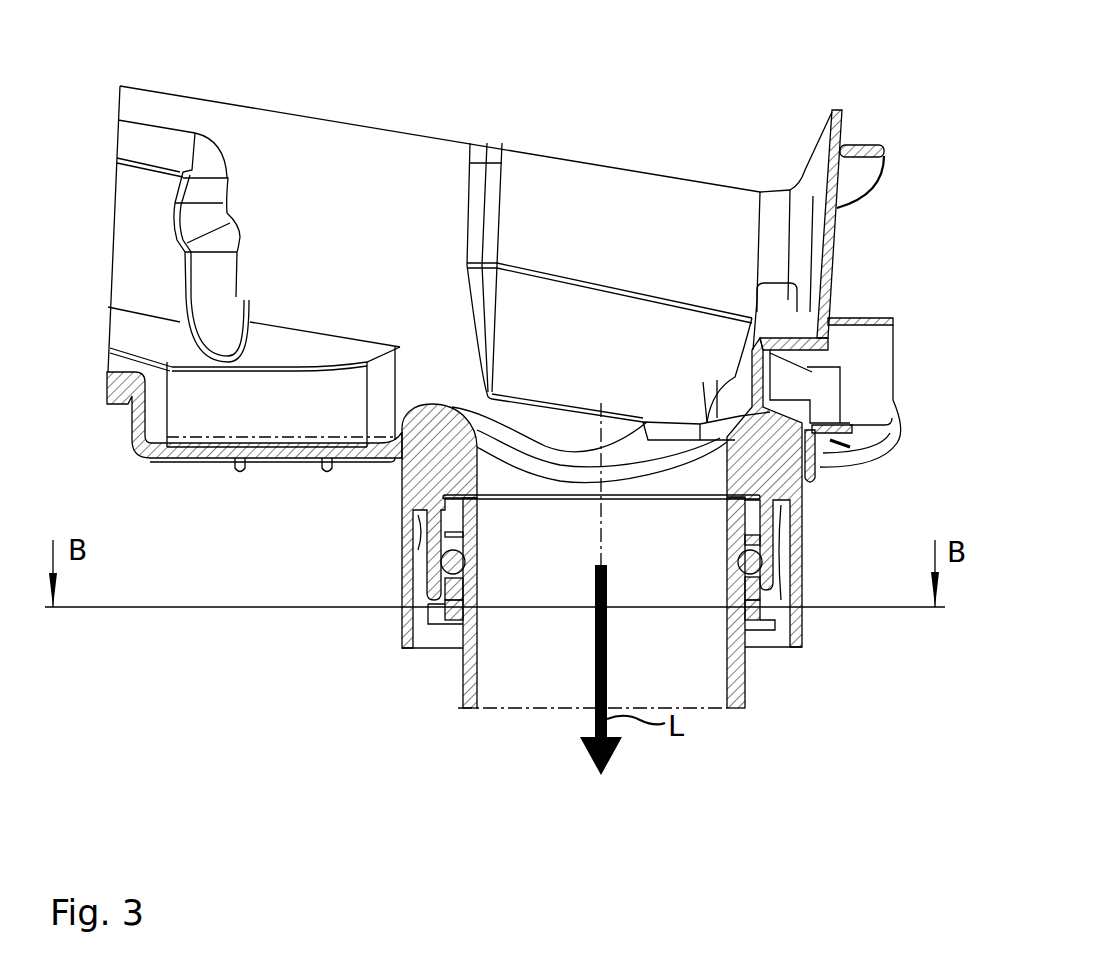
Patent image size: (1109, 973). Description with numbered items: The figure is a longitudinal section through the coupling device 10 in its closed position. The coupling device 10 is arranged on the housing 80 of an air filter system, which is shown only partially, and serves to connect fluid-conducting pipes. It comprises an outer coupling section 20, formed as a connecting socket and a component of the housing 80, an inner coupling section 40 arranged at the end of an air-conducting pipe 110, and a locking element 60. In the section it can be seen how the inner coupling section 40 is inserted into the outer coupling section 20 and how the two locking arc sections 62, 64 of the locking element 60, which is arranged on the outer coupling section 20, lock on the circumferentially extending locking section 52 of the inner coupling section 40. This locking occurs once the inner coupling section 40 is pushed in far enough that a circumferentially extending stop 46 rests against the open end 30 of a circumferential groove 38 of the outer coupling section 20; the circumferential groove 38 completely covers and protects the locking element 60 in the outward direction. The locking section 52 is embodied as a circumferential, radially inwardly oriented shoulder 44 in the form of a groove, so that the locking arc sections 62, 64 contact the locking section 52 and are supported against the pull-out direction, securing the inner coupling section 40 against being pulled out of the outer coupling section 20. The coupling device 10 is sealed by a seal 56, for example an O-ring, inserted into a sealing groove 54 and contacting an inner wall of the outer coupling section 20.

The coupling device 10 is at (770, 112).
The outer coupling section 20 is at (408, 484).
The open end 30 is at (790, 505).
The circumferential groove 38 is at (781, 572).
The inner coupling section 40 is at (470, 678).
The shoulder 44 is at (478, 602).
The stop 46 is at (733, 505).
The locking section 52 is at (445, 627).
The sealing groove 54 is at (462, 540).
The seal 56 is at (466, 565).
The locking element 60 is at (610, 612).
The locking arc section 62 is at (463, 614).
The locking arc section 64 is at (733, 613).
The housing 80 is at (674, 186).
The air-conducting pipe 110 is at (737, 706).